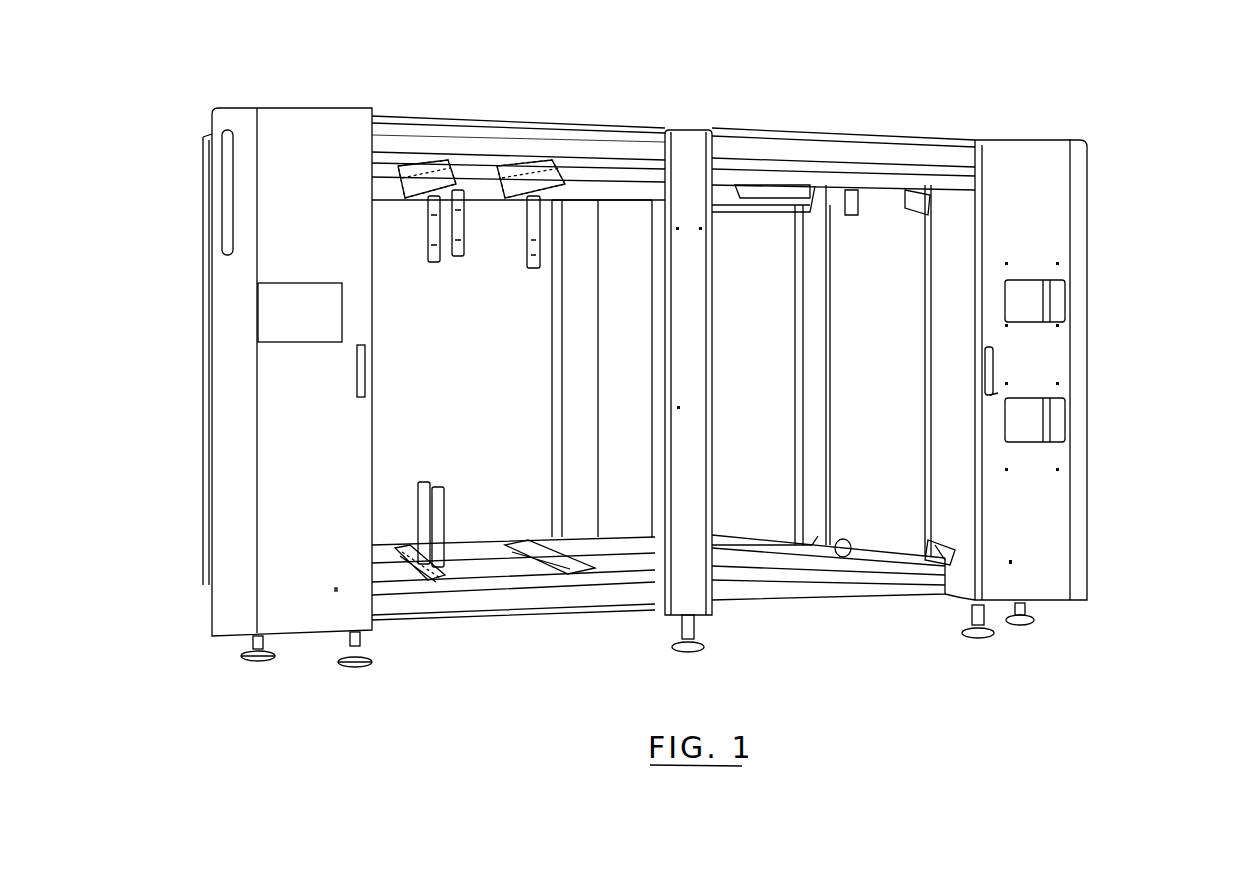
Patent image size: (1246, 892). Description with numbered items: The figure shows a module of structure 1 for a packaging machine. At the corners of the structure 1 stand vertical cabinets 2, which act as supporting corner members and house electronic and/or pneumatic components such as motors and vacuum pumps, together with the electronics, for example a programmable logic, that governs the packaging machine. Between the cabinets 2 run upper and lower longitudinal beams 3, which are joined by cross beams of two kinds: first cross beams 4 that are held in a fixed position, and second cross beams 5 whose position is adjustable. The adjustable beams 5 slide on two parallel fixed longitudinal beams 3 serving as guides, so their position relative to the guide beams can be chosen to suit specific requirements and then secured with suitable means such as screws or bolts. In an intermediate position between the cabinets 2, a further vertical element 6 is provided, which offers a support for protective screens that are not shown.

The module of structure 1 is at (1128, 208).
The vertical cabinet 2 is at (302, 126).
The longitudinal beam 3 is at (618, 143).
The first cross beam 4 is at (745, 190).
The second cross beam 5 is at (430, 178).
The vertical element 6 is at (690, 148).